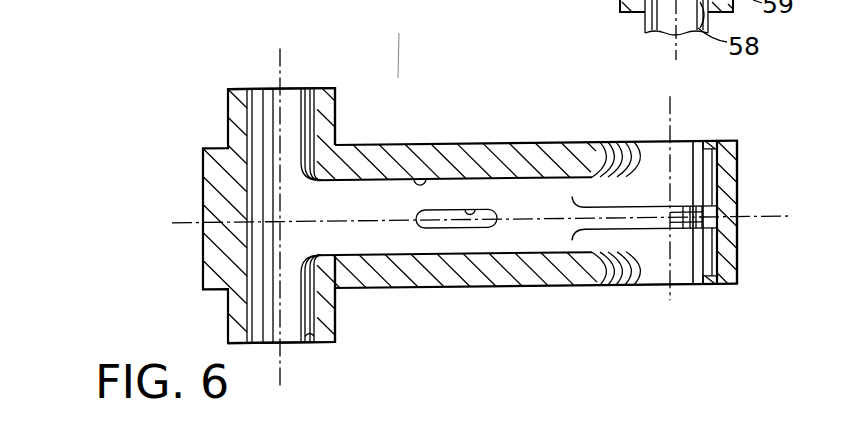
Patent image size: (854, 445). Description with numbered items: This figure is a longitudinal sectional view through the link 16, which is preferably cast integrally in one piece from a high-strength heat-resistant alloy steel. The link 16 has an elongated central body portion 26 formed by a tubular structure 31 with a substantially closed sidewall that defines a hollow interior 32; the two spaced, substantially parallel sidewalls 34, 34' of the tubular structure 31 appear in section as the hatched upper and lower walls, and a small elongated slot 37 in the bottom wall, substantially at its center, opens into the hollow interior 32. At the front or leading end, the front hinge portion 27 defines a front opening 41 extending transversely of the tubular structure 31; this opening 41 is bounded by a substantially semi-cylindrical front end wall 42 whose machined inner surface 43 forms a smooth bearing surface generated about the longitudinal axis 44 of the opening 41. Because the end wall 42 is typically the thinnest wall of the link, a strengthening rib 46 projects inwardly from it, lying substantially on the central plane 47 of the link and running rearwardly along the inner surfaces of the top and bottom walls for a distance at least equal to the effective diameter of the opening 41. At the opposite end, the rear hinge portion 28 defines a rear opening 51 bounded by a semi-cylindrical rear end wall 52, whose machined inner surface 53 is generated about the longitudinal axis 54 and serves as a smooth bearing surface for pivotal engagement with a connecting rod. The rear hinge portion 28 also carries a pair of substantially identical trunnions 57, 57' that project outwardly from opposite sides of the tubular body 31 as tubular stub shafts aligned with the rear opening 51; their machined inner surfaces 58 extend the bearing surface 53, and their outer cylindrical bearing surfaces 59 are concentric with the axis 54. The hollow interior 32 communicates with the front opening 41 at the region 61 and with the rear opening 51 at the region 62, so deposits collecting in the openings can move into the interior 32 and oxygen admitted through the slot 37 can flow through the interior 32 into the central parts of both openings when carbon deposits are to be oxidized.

The link 16 is at (398, 86).
The central body portion 26 is at (559, 310).
The front hinge portion 27 is at (744, 278).
The rear hinge portion 28 is at (203, 164).
The tubular structure 31 is at (447, 287).
The hollow interior 32 is at (416, 180).
The sidewall 34 is at (478, 294).
The sidewall 34' is at (478, 133).
The elongated slot 37 is at (473, 212).
The front opening 41 is at (685, 272).
The front end wall 42 is at (727, 185).
The inner surface 43 is at (703, 147).
The longitudinal axis 44 is at (672, 118).
The strengthening rib 46 is at (707, 220).
The central plane 47 is at (773, 213).
The rear opening 51 is at (280, 203).
The rear end wall 52 is at (210, 231).
The inner surface 53 is at (253, 242).
The longitudinal axis 54 is at (280, 63).
The trunnion 57 is at (198, 323).
The trunnion 57' is at (199, 123).
The inner surface 58 is at (302, 88).
The outer cylindrical bearing surface 59 is at (228, 102).
The region 61 is at (583, 197).
The region 62 is at (315, 203).